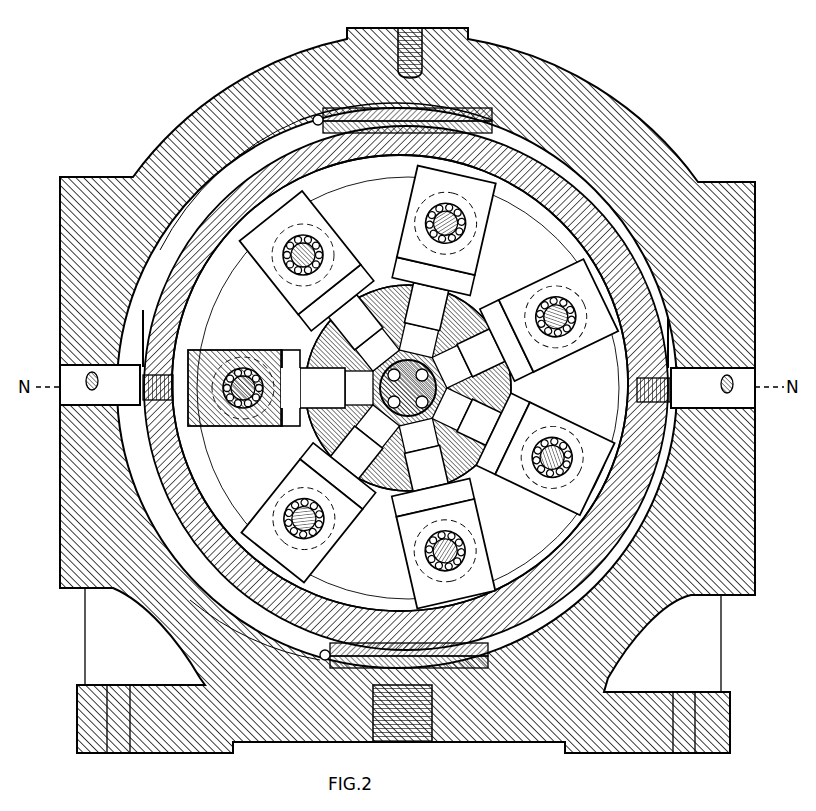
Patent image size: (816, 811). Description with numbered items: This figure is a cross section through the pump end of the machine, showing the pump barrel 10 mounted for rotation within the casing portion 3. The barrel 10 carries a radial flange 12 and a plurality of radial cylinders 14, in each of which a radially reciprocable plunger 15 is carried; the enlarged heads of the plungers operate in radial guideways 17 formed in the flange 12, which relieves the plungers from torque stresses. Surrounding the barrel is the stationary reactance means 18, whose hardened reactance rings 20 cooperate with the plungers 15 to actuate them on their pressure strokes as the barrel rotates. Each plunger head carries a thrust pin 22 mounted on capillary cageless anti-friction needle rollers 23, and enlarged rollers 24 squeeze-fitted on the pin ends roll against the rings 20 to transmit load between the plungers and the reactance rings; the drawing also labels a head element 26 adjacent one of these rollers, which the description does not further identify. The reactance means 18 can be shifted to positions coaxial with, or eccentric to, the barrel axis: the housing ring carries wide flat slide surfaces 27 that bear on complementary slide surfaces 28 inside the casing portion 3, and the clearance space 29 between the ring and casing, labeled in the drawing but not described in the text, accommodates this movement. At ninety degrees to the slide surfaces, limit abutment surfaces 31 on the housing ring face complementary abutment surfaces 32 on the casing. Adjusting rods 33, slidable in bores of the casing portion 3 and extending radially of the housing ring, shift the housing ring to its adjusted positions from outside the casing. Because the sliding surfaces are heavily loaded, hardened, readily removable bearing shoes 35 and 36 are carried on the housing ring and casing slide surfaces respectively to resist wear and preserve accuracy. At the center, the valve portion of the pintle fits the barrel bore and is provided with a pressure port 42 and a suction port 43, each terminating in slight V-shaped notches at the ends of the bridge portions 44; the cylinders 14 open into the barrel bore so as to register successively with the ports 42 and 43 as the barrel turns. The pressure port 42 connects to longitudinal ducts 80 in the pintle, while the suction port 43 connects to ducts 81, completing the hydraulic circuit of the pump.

The casing portion 3 is at (668, 165).
The pump barrel 10 is at (500, 388).
The radial flange 12 is at (556, 200).
The radial cylinders 14 is at (423, 454).
The plunger 15 is at (444, 544).
The radial guideways 17 is at (300, 318).
The reactance means 18 is at (585, 215).
The reactance rings 20 is at (606, 240).
The thrust pin 22 is at (323, 247).
The needle rollers 23 is at (318, 240).
The rollers 24 is at (333, 259).
The piston head 26 is at (392, 181).
The slide surfaces 27 is at (512, 124).
The complementary slide surfaces 28 is at (508, 113).
The groove 29 is at (523, 147).
The limit abutment surfaces 31 is at (396, 336).
The limit abutment surfaces 32 is at (415, 325).
The adjusting rods 33 is at (407, 386).
The bearing shoes 35 is at (258, 96).
The bearing shoes 36 is at (297, 84).
The pressure port 42 is at (436, 264).
The suction port 43 is at (376, 445).
The bridge portions 44 is at (280, 388).
The ducts 80 is at (489, 334).
The ducts 81 is at (486, 441).